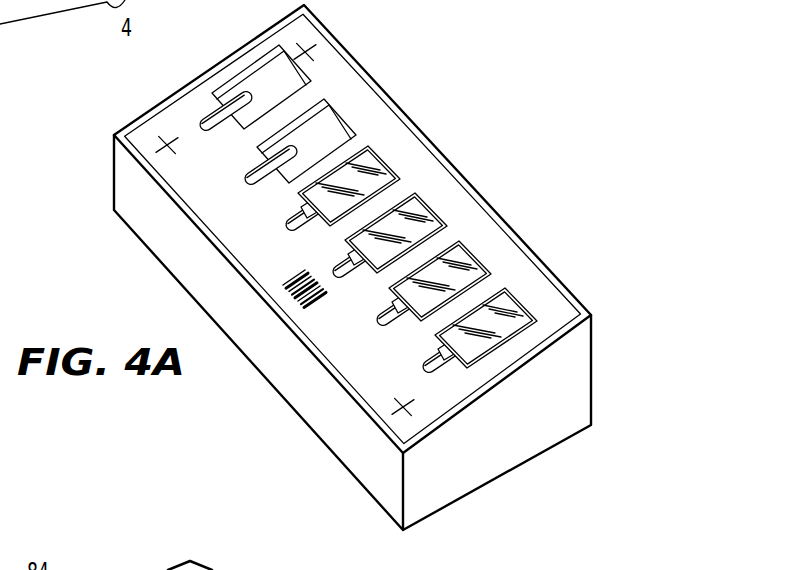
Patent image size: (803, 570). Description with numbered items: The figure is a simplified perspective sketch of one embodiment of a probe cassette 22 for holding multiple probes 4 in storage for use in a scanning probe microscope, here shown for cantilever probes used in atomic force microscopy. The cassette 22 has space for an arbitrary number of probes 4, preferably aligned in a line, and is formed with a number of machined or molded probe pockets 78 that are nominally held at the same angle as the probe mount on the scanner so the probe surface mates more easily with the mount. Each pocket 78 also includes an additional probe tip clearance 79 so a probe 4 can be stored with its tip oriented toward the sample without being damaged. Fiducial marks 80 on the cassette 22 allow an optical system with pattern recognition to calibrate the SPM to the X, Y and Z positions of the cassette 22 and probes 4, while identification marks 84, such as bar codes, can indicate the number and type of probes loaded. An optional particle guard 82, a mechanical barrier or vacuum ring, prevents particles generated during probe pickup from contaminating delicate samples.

The probe cassette 22 is at (586, 356).
The particle guard 82 is at (351, 393).
The fiducial marks 80 is at (168, 152).
The probe pockets 78 is at (331, 122).
The probe tip clearance 79 is at (252, 185).
The probes 4 is at (415, 205).
The identification marks 84 is at (313, 311).